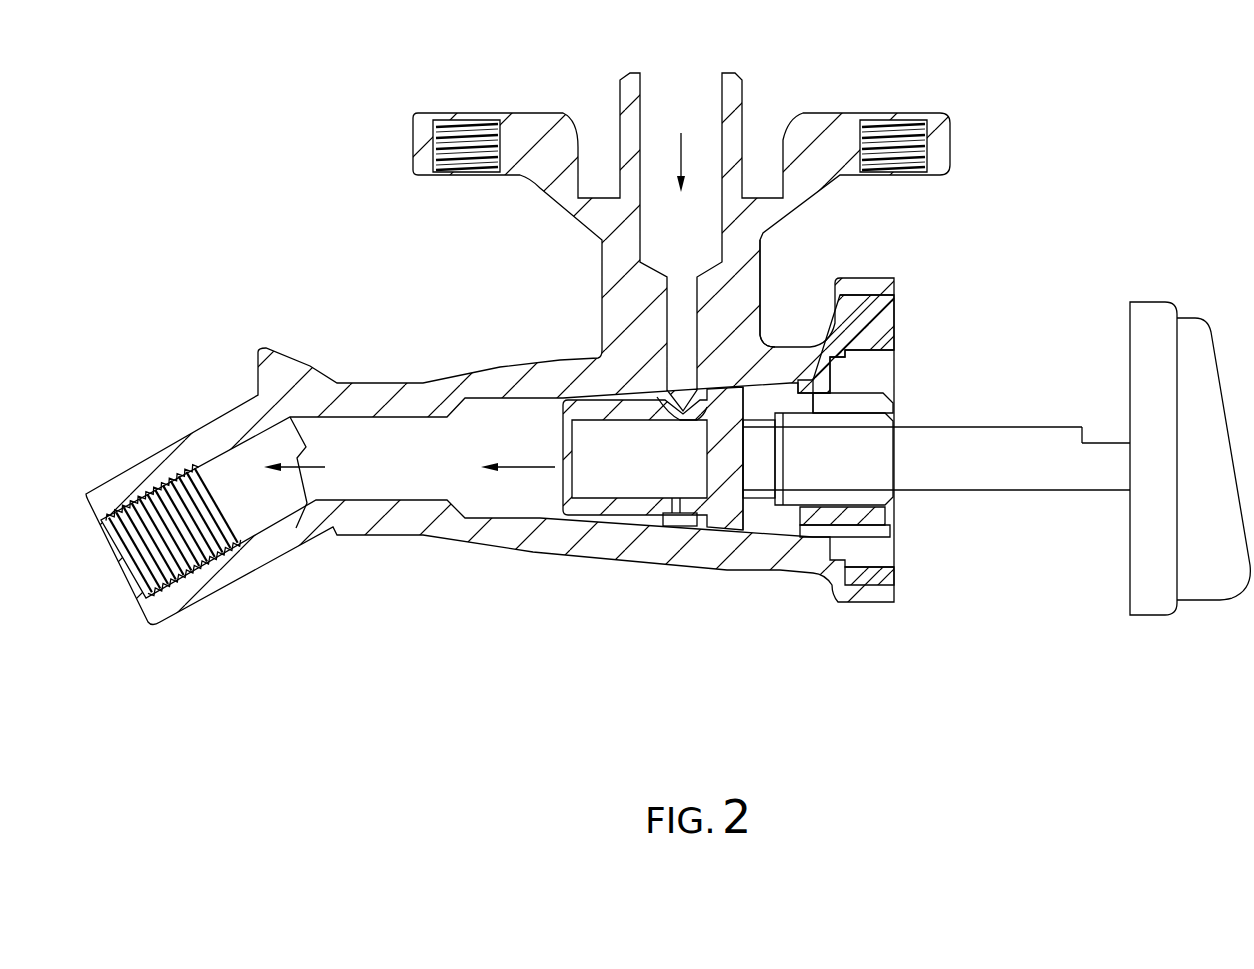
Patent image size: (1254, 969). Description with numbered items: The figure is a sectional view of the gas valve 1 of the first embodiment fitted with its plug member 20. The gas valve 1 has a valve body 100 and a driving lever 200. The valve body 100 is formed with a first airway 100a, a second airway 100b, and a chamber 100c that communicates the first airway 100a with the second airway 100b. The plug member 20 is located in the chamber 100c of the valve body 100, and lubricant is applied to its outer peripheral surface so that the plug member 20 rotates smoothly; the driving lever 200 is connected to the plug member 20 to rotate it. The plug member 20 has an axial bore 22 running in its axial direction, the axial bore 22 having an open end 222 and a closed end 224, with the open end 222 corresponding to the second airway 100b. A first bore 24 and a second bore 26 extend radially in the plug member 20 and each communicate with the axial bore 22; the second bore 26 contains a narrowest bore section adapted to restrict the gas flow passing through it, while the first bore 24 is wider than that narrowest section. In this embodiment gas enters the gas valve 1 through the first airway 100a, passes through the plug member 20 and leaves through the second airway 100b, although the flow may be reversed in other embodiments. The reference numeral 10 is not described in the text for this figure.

The gas valve 1 is at (1151, 57).
The valve body 100 is at (500, 368).
The first airway 100a is at (677, 328).
The second airway 100b is at (227, 487).
The chamber 100c is at (492, 494).
The valve seat 10 is at (756, 527).
The plug member 20 is at (772, 516).
The axial bore 22 is at (596, 485).
The open end 222 is at (552, 470).
The closed end 224 is at (748, 522).
The first bore 24 is at (761, 340).
The second bore 26 is at (668, 522).
The driving lever 200 is at (998, 491).